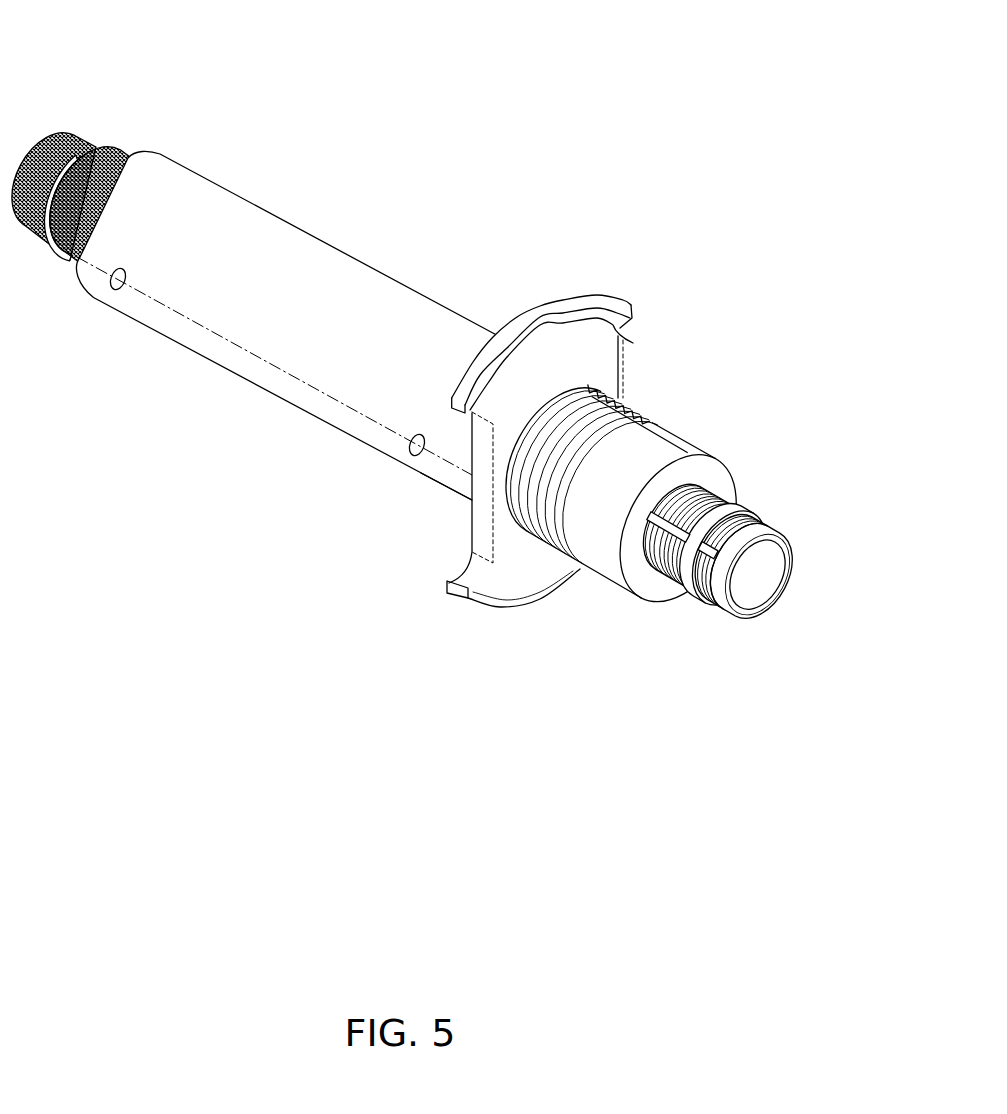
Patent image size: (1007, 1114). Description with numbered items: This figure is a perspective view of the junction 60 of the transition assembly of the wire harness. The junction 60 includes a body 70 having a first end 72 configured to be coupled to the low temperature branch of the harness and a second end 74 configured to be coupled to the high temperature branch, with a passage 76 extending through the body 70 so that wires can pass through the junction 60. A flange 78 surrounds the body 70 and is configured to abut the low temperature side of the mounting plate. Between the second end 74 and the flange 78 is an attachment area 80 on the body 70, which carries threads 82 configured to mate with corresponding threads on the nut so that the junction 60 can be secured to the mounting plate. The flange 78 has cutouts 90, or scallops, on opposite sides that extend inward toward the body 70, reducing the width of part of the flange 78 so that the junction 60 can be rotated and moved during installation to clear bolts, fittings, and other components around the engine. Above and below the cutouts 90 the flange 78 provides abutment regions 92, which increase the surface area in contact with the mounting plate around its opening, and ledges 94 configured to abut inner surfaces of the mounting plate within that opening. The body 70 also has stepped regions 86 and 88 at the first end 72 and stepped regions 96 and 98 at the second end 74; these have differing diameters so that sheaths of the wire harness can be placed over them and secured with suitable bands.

The junction 60 is at (654, 70).
The body 70 is at (323, 425).
The first end 72 is at (47, 130).
The second end 74 is at (786, 553).
The passage 76 is at (752, 578).
The flange 78 is at (621, 348).
The attachment area 80 is at (667, 425).
The threads 82 is at (632, 403).
The stepped region 86 is at (83, 140).
The stepped region 88 is at (129, 157).
The cutouts 90 is at (472, 538).
The abutment regions 92 is at (548, 300).
The ledges 94 is at (588, 323).
The stepped region 96 is at (763, 521).
The stepped region 98 is at (720, 480).